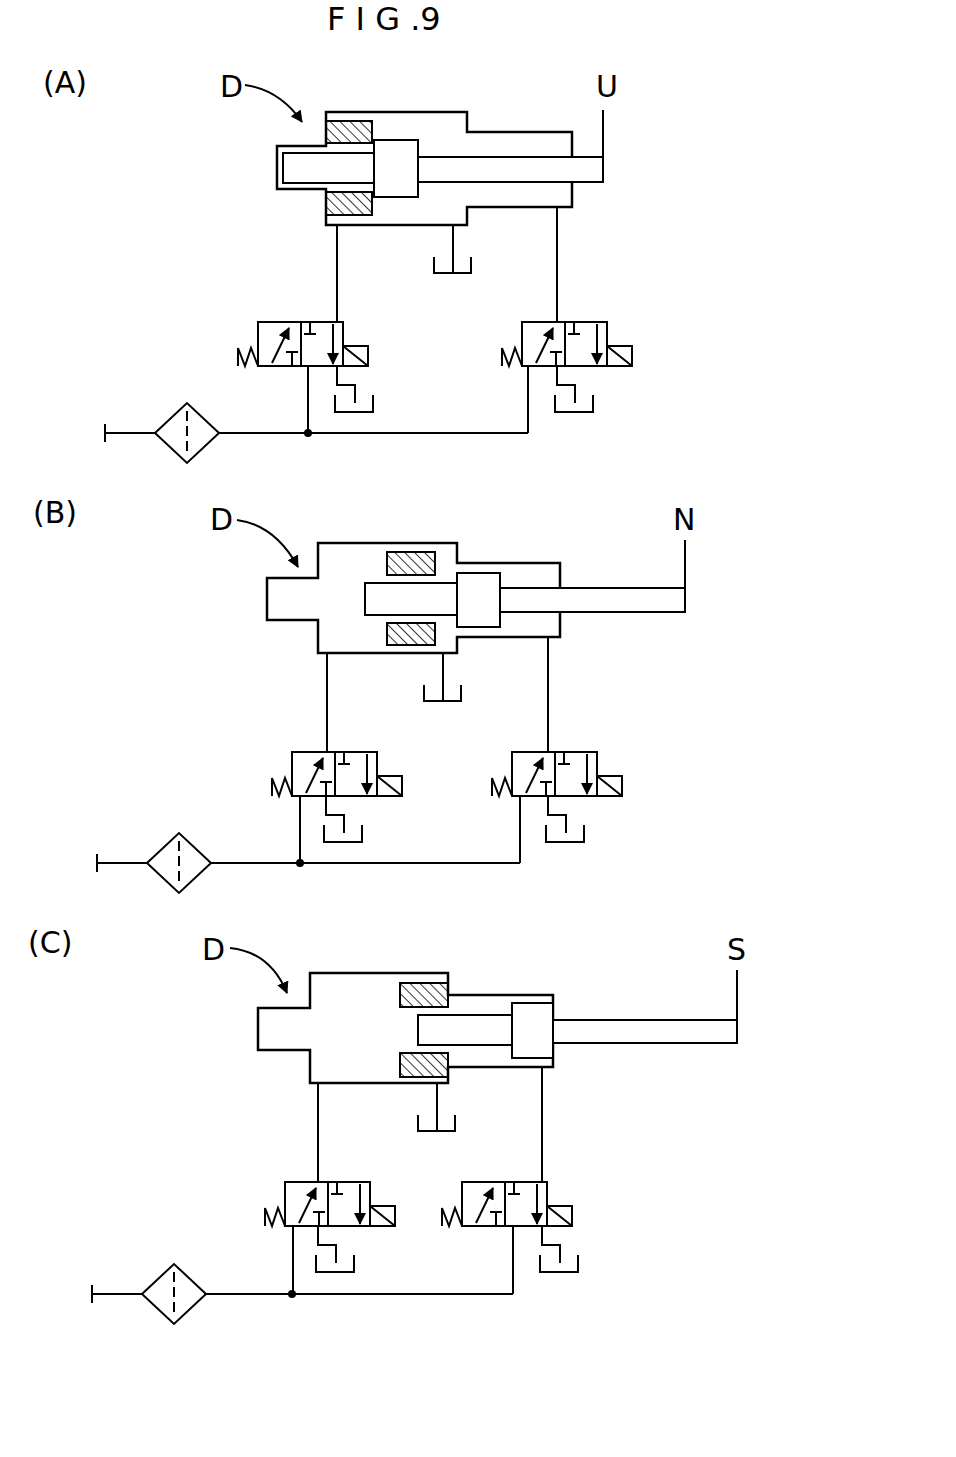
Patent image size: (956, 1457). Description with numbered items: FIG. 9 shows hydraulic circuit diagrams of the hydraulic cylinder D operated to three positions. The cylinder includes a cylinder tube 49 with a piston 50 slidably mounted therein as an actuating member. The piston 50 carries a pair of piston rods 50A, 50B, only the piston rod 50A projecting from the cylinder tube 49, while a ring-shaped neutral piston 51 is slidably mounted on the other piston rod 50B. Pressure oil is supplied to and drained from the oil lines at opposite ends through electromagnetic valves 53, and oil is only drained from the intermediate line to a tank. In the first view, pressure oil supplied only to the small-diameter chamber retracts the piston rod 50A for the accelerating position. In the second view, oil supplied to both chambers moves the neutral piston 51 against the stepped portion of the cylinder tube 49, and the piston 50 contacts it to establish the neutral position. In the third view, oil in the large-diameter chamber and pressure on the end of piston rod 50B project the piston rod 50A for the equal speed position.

The cylinder tube 49 is at (400, 226).
The piston 50 is at (405, 150).
The piston rod 50A is at (525, 183).
The piston rod 50B is at (295, 167).
The neutral piston 51 is at (360, 121).
The electromagnetic valve 53 is at (300, 322).